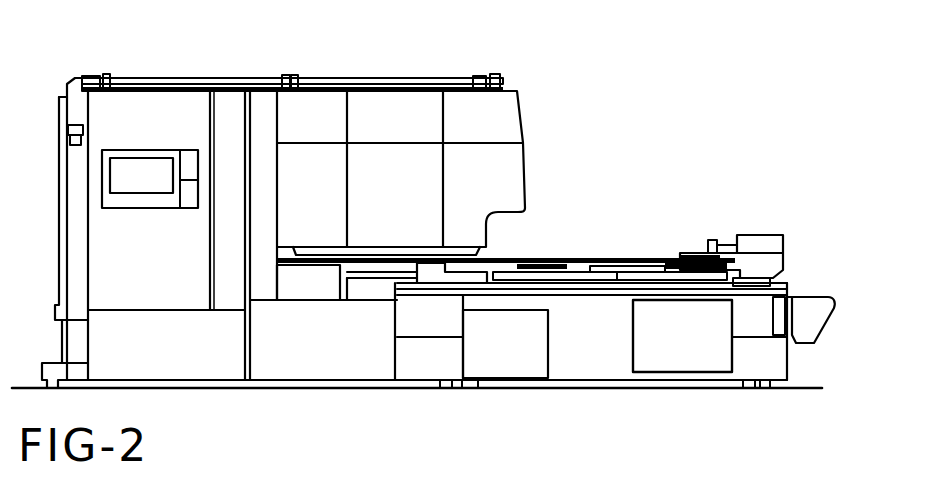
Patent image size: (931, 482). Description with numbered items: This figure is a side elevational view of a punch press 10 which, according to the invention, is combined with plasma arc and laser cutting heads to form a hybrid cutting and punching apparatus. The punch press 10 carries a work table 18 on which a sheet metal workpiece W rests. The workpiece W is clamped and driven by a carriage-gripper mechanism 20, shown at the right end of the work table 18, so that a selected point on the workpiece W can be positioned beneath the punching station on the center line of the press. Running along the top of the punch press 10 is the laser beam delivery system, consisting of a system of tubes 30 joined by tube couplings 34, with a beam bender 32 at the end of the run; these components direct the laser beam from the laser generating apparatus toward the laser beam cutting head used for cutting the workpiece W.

The punch press 10 is at (567, 132).
The work table 18 is at (570, 263).
The carriage-gripper mechanism 20 is at (750, 233).
The tubes 30 is at (174, 77).
The beam benders 32 is at (74, 82).
The tube couplings 34 is at (290, 77).
The sheet metal workpiece W is at (598, 257).